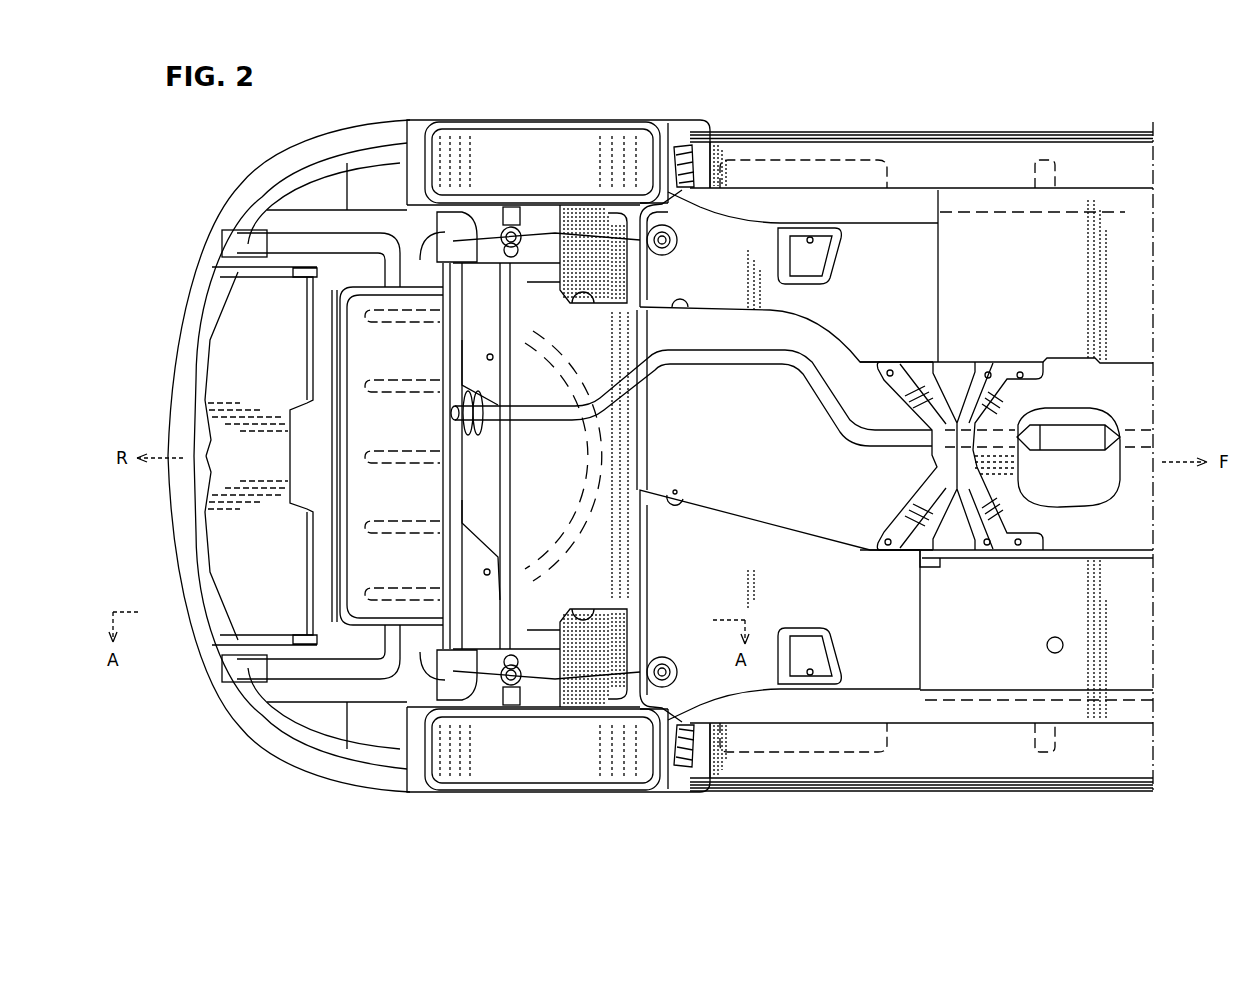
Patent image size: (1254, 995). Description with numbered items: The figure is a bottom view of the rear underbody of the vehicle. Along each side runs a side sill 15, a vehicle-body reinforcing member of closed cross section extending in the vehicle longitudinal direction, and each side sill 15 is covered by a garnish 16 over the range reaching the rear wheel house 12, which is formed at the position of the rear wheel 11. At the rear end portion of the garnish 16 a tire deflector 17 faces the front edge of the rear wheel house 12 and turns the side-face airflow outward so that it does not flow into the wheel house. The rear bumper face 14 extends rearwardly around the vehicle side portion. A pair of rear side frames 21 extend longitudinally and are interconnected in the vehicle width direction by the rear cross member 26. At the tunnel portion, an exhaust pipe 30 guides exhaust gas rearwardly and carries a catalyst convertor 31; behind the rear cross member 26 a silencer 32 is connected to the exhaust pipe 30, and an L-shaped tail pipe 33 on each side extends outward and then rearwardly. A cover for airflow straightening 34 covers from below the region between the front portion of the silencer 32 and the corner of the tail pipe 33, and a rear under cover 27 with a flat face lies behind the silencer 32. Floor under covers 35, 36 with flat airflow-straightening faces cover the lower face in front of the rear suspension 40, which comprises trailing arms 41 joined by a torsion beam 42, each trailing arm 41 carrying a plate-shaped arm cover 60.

The rear wheel 11 is at (484, 140).
The rear wheel house 12 is at (408, 173).
The rear bumper face 14 is at (167, 361).
The side sill 15 is at (1133, 217).
The garnish 16 is at (990, 152).
The tire deflector 17 is at (700, 158).
The rear side frame 21 is at (514, 292).
The rear cross member 26 is at (512, 455).
The rear under cover 27 is at (258, 470).
The exhaust pipe 30 is at (847, 442).
The catalyst convertor 31 is at (1058, 452).
The silencer 32 is at (400, 421).
The tail pipe 33 is at (302, 232).
The cover for airflow straightening 34 is at (428, 248).
The floor under cover for airflow straightening 35 is at (1037, 291).
The floor under cover for airflow straightening 36 is at (882, 291).
The rear suspension 40 is at (648, 428).
The trailing arm 41 is at (513, 210).
The torsion beam 42 is at (652, 396).
The arm cover for airflow straightening 60 is at (605, 256).